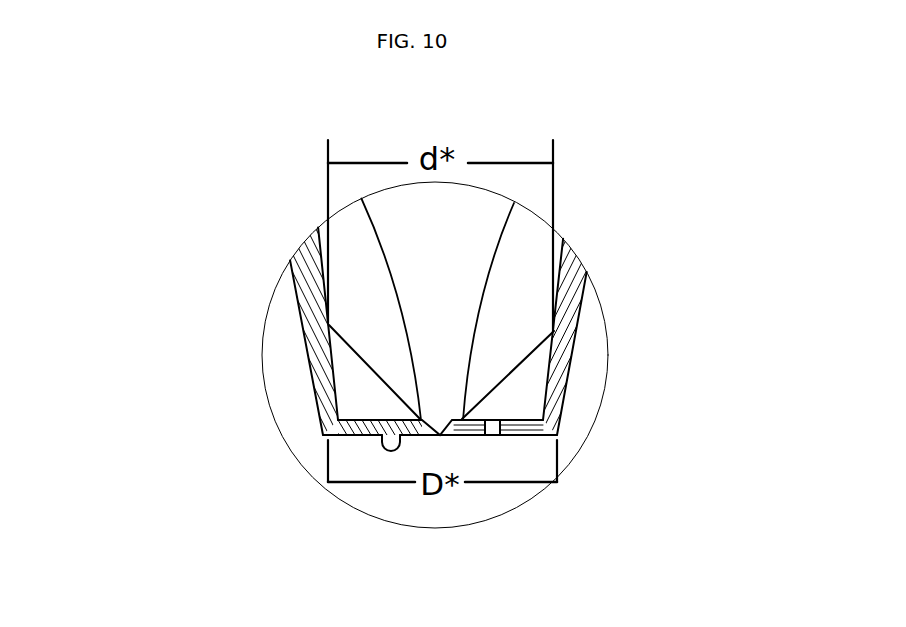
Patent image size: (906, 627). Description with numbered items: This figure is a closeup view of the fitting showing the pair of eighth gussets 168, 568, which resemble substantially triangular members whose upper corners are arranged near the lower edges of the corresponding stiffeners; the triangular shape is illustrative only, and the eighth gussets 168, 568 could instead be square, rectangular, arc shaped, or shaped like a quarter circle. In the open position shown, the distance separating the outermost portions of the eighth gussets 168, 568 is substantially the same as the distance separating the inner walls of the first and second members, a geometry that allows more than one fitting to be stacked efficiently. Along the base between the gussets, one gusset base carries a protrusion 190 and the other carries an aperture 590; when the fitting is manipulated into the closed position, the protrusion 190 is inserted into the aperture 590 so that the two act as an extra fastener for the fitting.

The eighth gusset 168 is at (357, 397).
The eighth gusset 568 is at (520, 387).
The protrusion 190 is at (388, 450).
The aperture 590 is at (490, 443).